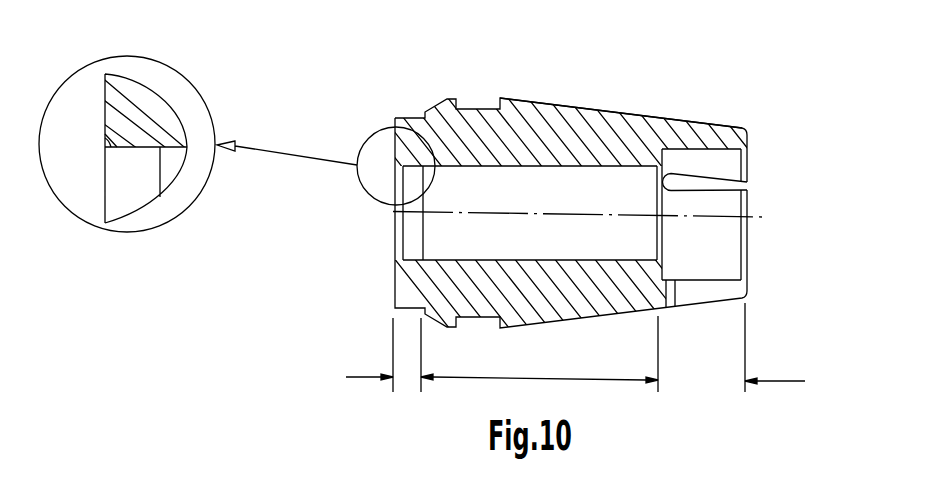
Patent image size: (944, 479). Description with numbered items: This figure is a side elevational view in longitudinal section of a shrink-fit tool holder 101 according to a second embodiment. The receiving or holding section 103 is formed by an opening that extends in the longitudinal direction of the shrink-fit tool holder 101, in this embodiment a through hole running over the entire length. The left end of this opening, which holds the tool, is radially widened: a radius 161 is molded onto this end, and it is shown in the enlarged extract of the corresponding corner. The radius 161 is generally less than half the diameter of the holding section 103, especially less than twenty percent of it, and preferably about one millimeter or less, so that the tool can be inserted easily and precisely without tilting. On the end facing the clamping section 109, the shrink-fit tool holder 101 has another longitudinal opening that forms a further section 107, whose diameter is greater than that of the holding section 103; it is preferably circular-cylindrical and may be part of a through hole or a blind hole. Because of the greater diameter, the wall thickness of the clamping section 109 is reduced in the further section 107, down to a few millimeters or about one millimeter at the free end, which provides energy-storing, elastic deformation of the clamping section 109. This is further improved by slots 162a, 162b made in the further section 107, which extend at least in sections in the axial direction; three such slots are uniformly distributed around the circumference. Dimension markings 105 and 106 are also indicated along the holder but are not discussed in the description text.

The shrink-fit tool holder 101 is at (627, 100).
The receiving or holding section 103 is at (513, 166).
The clamping section length 105 is at (545, 369).
The end wall thickness 106 is at (389, 394).
The further section 107 is at (741, 379).
The clamping section 109 is at (682, 120).
The radius 161 is at (110, 150).
The slot 162a is at (743, 181).
The slot 162b is at (718, 295).